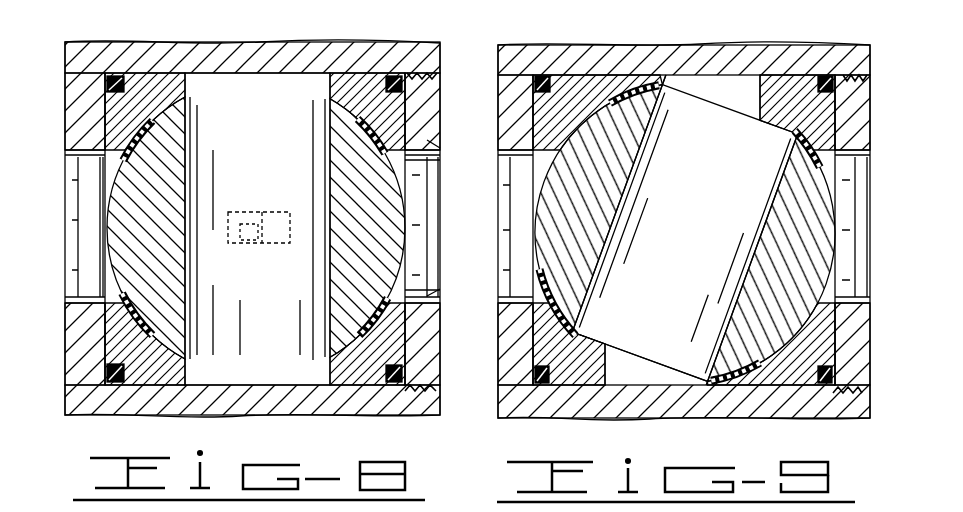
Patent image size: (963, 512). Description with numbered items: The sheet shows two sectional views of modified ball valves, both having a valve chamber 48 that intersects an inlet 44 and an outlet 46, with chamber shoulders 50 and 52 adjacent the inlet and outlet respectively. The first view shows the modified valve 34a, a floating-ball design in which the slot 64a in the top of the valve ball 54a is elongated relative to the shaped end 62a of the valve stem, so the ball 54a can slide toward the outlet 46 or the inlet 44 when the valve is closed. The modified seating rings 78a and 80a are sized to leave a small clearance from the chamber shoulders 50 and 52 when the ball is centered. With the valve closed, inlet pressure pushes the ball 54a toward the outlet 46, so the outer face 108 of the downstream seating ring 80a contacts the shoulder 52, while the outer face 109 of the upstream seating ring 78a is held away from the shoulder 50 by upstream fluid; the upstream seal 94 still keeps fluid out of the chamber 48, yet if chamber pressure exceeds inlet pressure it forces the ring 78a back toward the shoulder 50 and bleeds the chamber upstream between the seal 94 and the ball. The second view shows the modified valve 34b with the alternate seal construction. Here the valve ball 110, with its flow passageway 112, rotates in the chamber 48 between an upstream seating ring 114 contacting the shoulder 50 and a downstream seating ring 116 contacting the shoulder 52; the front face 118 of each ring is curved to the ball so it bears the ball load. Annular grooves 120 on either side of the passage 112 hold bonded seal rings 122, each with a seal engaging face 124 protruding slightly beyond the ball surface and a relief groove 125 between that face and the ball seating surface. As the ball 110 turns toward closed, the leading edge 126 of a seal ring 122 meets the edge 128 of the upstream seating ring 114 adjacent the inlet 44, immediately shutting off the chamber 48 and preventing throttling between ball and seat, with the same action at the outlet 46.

In FIG. 8, the modified valve 34a is at (131, 35).
In FIG. 9, the modified valve 34b is at (558, 37).
In FIG. 8, the inlet 44 is at (88, 235).
In FIG. 8, the outlet 46 is at (420, 243).
In FIG. 9, the outlet 46 is at (847, 208).
In FIG. 8, the valve chamber 48 is at (190, 372).
In FIG. 9, the valve chamber 48 is at (623, 380).
In FIG. 8, the chamber shoulder 50 is at (110, 84).
In FIG. 9, the chamber shoulder 50 is at (535, 376).
In FIG. 8, the chamber shoulder 52 is at (408, 122).
In FIG. 9, the chamber shoulder 52 is at (833, 355).
In FIG. 8, the valve ball 54a is at (338, 193).
In FIG. 8, the shaped end of valve stem 62a is at (243, 248).
In FIG. 8, the slot 64a is at (272, 250).
In FIG. 8, the upstream seating ring 78a is at (108, 102).
In FIG. 8, the downstream seating ring 80a is at (406, 100).
In FIG. 8, the seal 94 is at (380, 140).
In FIG. 8, the outer face of downstream seating ring 108 is at (438, 180).
In FIG. 8, the outer face of upstream seating ring 109 is at (80, 150).
In FIG. 9, the valve ball 110 is at (625, 178).
In FIG. 9, the flow passageway 112 is at (671, 226).
In FIG. 9, the upstream seating ring 114 is at (540, 356).
In FIG. 9, the downstream seating ring 116 is at (825, 118).
In FIG. 9, the front face 118 is at (588, 378).
In FIG. 9, the annular groove 120 is at (781, 171).
In FIG. 9, the seal ring 122 is at (790, 177).
In FIG. 9, the seal engaging face 124 is at (633, 85).
In FIG. 9, the relief groove 125 is at (614, 92).
In FIG. 9, the leading edge 126 is at (578, 330).
In FIG. 9, the edge of upstream seating ring 128 is at (540, 328).